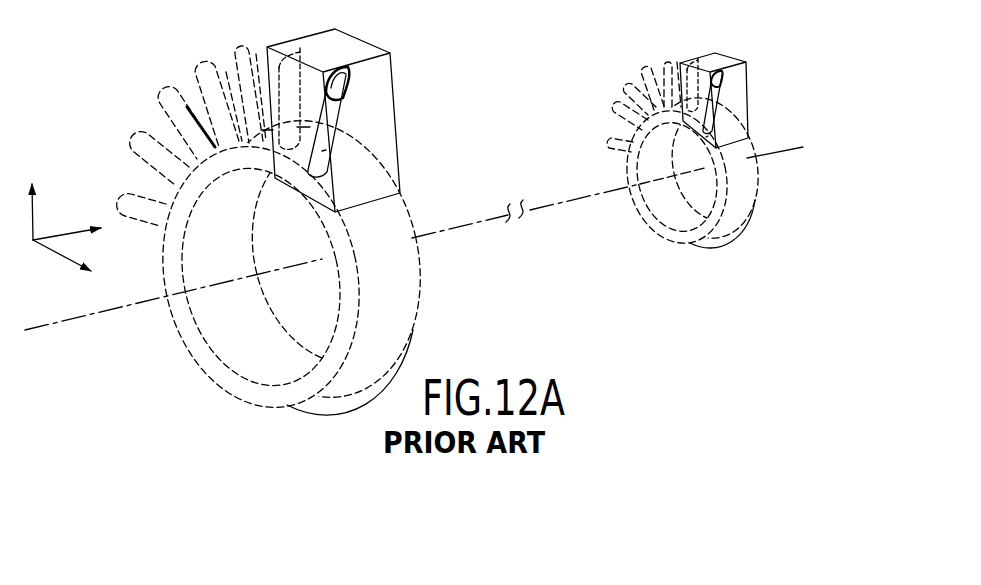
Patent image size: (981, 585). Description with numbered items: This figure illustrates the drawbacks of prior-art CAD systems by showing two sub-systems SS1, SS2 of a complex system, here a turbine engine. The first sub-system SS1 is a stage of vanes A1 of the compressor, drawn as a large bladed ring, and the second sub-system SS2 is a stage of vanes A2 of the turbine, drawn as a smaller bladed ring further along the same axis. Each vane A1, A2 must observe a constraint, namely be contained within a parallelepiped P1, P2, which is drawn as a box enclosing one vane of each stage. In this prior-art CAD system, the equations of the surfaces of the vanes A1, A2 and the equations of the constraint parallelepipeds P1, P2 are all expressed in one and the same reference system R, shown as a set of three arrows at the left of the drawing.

The parallelepiped P1 is at (376, 46).
The sub-system SS1 is at (348, 119).
The vane A1 is at (322, 151).
The reference system R is at (50, 226).
The parallelepiped P2 is at (729, 50).
The sub-system SS2 is at (729, 88).
The vane A2 is at (706, 137).